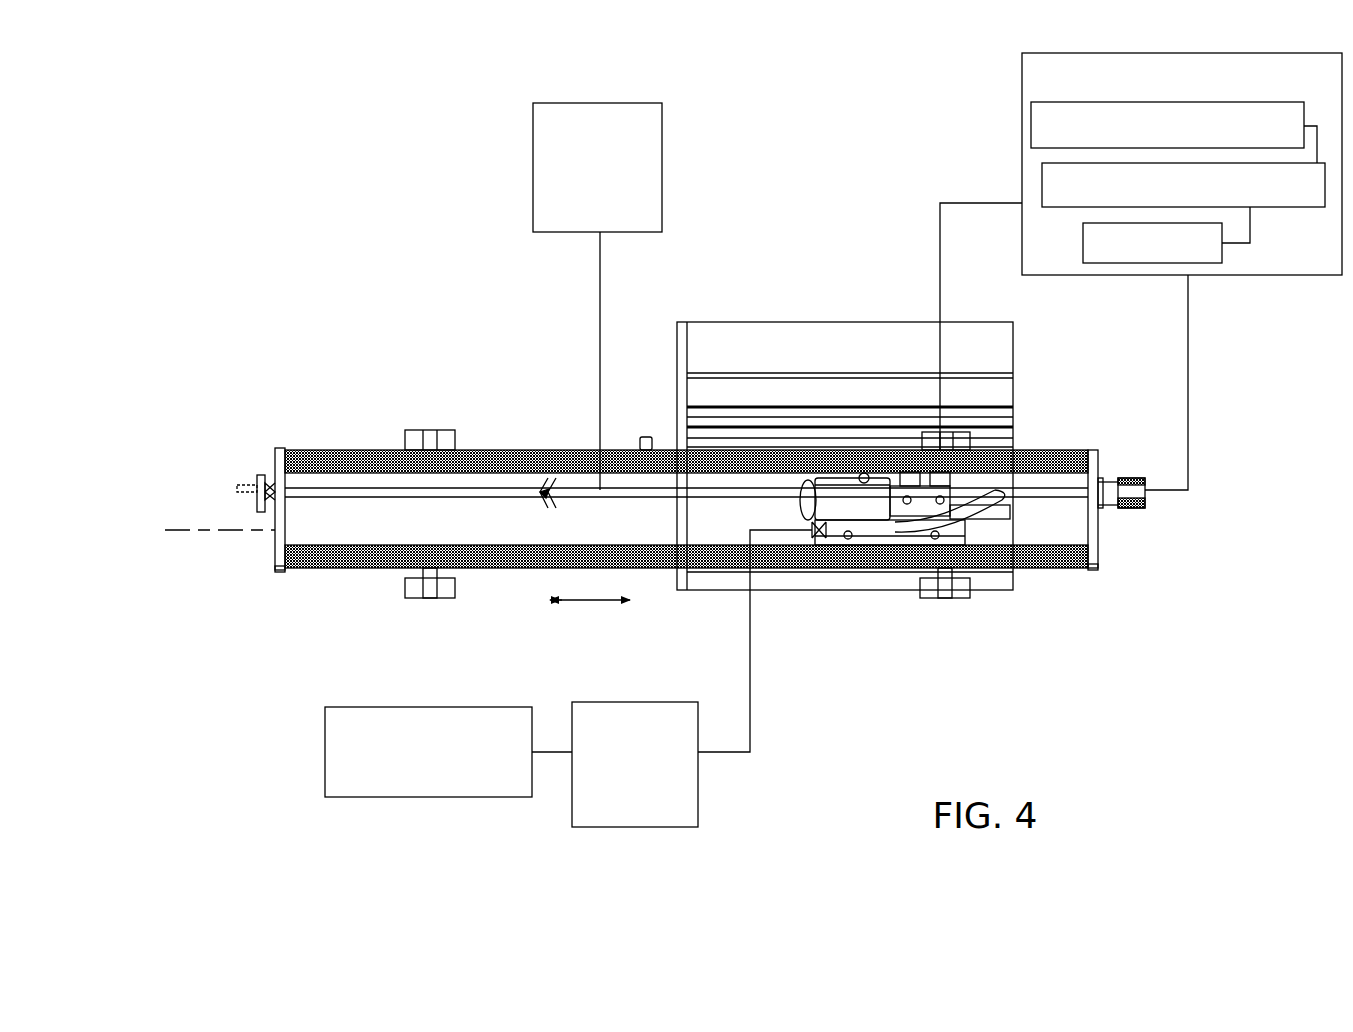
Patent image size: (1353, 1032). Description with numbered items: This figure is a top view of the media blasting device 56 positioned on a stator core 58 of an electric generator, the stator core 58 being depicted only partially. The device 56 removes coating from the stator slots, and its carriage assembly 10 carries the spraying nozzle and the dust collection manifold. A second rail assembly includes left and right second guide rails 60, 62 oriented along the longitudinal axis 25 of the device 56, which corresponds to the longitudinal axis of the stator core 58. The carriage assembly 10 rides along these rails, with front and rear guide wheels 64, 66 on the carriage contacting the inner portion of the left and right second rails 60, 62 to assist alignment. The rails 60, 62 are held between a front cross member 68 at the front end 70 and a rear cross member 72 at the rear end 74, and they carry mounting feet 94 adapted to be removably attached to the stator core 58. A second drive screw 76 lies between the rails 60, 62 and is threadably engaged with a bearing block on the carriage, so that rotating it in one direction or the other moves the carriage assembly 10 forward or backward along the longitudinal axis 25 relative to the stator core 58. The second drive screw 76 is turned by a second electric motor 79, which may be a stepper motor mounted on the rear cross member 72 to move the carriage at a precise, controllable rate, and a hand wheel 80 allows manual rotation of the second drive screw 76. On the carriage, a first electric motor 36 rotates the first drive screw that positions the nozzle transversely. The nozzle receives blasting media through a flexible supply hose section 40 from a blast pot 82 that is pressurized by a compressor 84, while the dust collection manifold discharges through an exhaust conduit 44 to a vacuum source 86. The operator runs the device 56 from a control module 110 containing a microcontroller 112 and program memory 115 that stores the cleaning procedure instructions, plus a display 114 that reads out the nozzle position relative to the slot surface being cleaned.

The carriage assembly 10 is at (1015, 450).
The longitudinal axis 25 is at (178, 530).
The first electric motor 36 is at (925, 475).
The supply hose section 40 is at (900, 572).
The exhaust conduit 44 is at (815, 478).
The media blasting device 56 is at (325, 165).
The stator core 58 is at (1013, 340).
The left second guide rail 60 is at (325, 572).
The right second guide rail 62 is at (332, 450).
The front guide wheel 64 is at (870, 478).
The rear guide wheel 66 is at (1010, 590).
The front cross member 68 is at (275, 547).
The front end 70 is at (275, 408).
The rear cross member 72 is at (1098, 463).
The rear end 74 is at (1138, 592).
The second drive screw 76 is at (532, 488).
The second electric motor 79 is at (1135, 510).
The hand wheel 80 is at (257, 478).
The blast pot 82 is at (658, 827).
The compressor 84 is at (372, 797).
The vacuum source 86 is at (533, 150).
The mounting feet 94 is at (425, 430).
The control module 110 is at (1123, 271).
The microcontroller 112 is at (1042, 192).
The display 114 is at (1222, 260).
The program memory 115 is at (1031, 138).